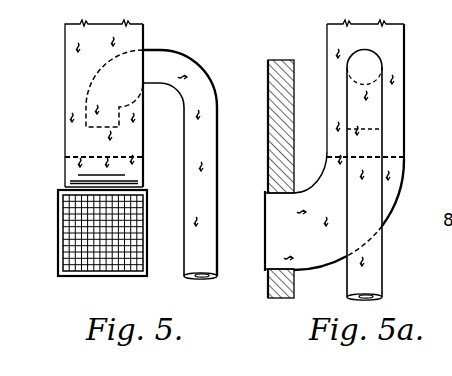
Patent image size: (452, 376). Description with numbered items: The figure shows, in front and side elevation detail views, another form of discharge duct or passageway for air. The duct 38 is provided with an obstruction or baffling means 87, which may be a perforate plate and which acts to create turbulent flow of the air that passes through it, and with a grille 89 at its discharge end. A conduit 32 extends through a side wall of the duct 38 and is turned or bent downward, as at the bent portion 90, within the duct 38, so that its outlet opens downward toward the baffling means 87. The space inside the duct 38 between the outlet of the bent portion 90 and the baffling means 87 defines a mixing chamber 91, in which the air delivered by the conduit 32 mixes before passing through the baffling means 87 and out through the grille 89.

In FIG. 5, the conduit 32 is at (207, 159).
In FIG. 5A, the conduit 32 is at (373, 251).
In FIG. 5, the duct 38 is at (133, 42).
In FIG. 5A, the duct 38 is at (393, 97).
In FIG. 5, the obstruction or baffling means 87 is at (73, 157).
In FIG. 5A, the obstruction or baffling means 87 is at (390, 157).
In FIG. 5, the grille 89 is at (77, 218).
In FIG. 5A, the grille 89 is at (266, 213).
In FIG. 5, the downwardly bent portion of conduit 90 is at (98, 87).
In FIG. 5A, the downwardly bent portion of conduit 90 is at (372, 114).
In FIG. 5, the mixing chamber 91 is at (81, 138).
In FIG. 5A, the mixing chamber 91 is at (336, 140).